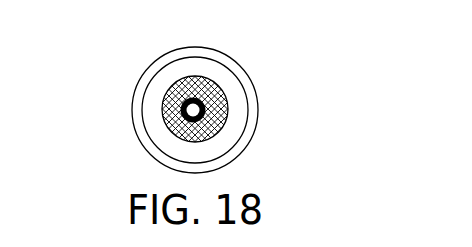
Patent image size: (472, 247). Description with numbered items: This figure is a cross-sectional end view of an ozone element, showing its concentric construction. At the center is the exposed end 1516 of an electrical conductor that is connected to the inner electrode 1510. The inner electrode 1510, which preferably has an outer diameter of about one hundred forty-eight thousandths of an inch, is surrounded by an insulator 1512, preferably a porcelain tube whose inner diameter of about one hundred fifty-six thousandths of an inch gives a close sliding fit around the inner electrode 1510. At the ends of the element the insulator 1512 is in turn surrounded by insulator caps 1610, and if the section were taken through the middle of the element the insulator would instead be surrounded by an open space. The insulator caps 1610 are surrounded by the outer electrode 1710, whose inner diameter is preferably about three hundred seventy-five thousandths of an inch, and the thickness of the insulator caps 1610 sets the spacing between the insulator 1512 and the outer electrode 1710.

The outer electrode 1710 is at (148, 72).
The insulator caps 1610 is at (223, 79).
The insulator 1512 is at (207, 113).
The exposed end of electrical conductor 1516 is at (195, 109).
The inner electrode 1510 is at (204, 118).